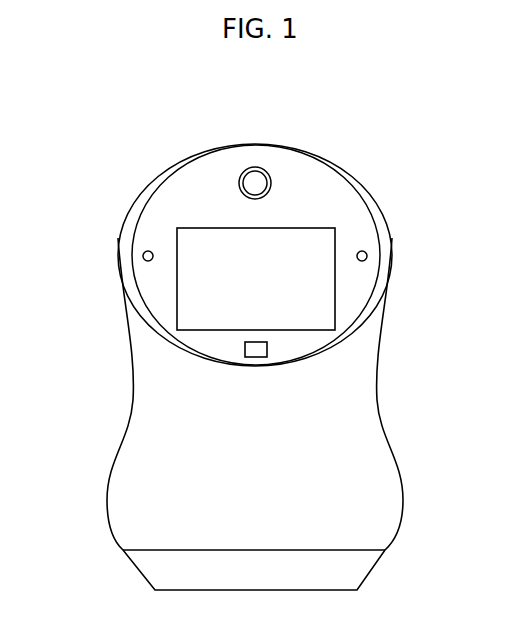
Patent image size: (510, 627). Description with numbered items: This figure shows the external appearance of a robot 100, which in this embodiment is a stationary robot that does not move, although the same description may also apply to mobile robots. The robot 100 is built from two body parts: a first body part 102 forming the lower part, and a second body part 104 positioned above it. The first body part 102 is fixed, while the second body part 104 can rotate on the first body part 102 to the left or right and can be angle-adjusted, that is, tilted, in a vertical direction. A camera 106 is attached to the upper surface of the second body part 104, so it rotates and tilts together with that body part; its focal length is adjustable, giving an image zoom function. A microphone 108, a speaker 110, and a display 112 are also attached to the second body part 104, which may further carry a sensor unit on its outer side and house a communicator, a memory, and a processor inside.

The robot 100 is at (118, 106).
The first body part 102 is at (360, 568).
The second body part 104 is at (368, 356).
The camera 106 is at (256, 176).
The microphone 108 is at (142, 256).
The speaker 110 is at (244, 350).
The display 112 is at (176, 288).